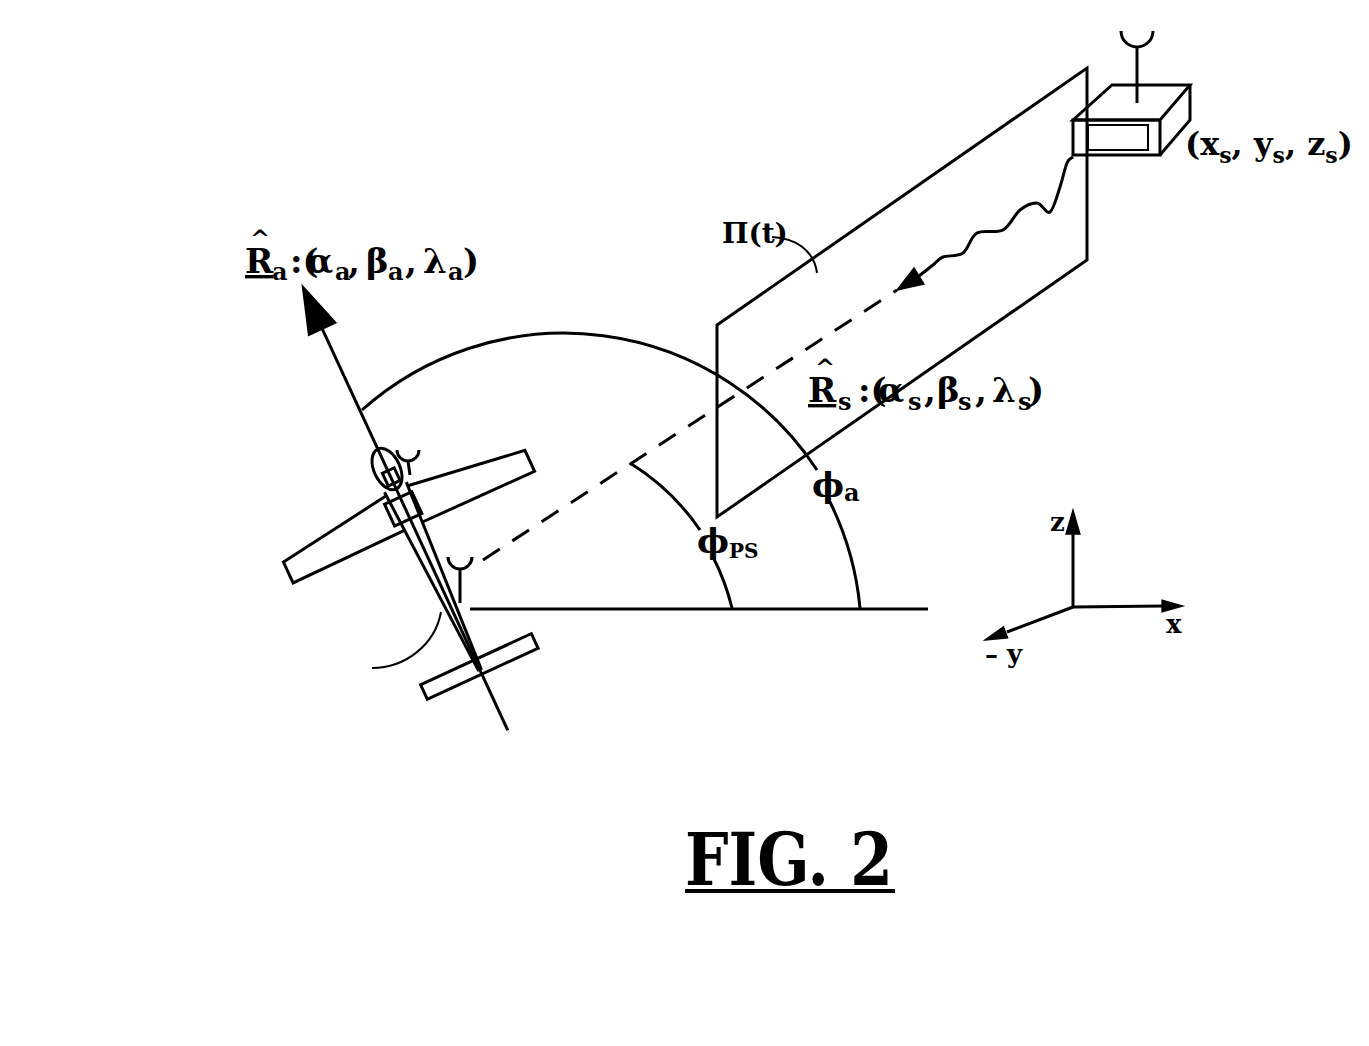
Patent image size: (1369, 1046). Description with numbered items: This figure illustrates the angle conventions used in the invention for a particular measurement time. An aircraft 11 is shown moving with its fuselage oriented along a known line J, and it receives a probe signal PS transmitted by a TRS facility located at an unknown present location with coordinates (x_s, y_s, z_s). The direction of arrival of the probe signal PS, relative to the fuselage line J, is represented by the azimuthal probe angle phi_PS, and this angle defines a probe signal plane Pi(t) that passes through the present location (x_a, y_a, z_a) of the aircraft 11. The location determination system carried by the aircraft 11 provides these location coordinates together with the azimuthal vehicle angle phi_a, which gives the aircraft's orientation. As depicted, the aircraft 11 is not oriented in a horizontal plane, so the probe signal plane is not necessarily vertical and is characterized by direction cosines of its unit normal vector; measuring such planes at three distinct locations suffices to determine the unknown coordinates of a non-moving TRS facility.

The aircraft 11 is at (378, 484).
The TRS facility TRS is at (1131, 93).
The probe signal PS is at (996, 218).
The line JJ J is at (408, 512).